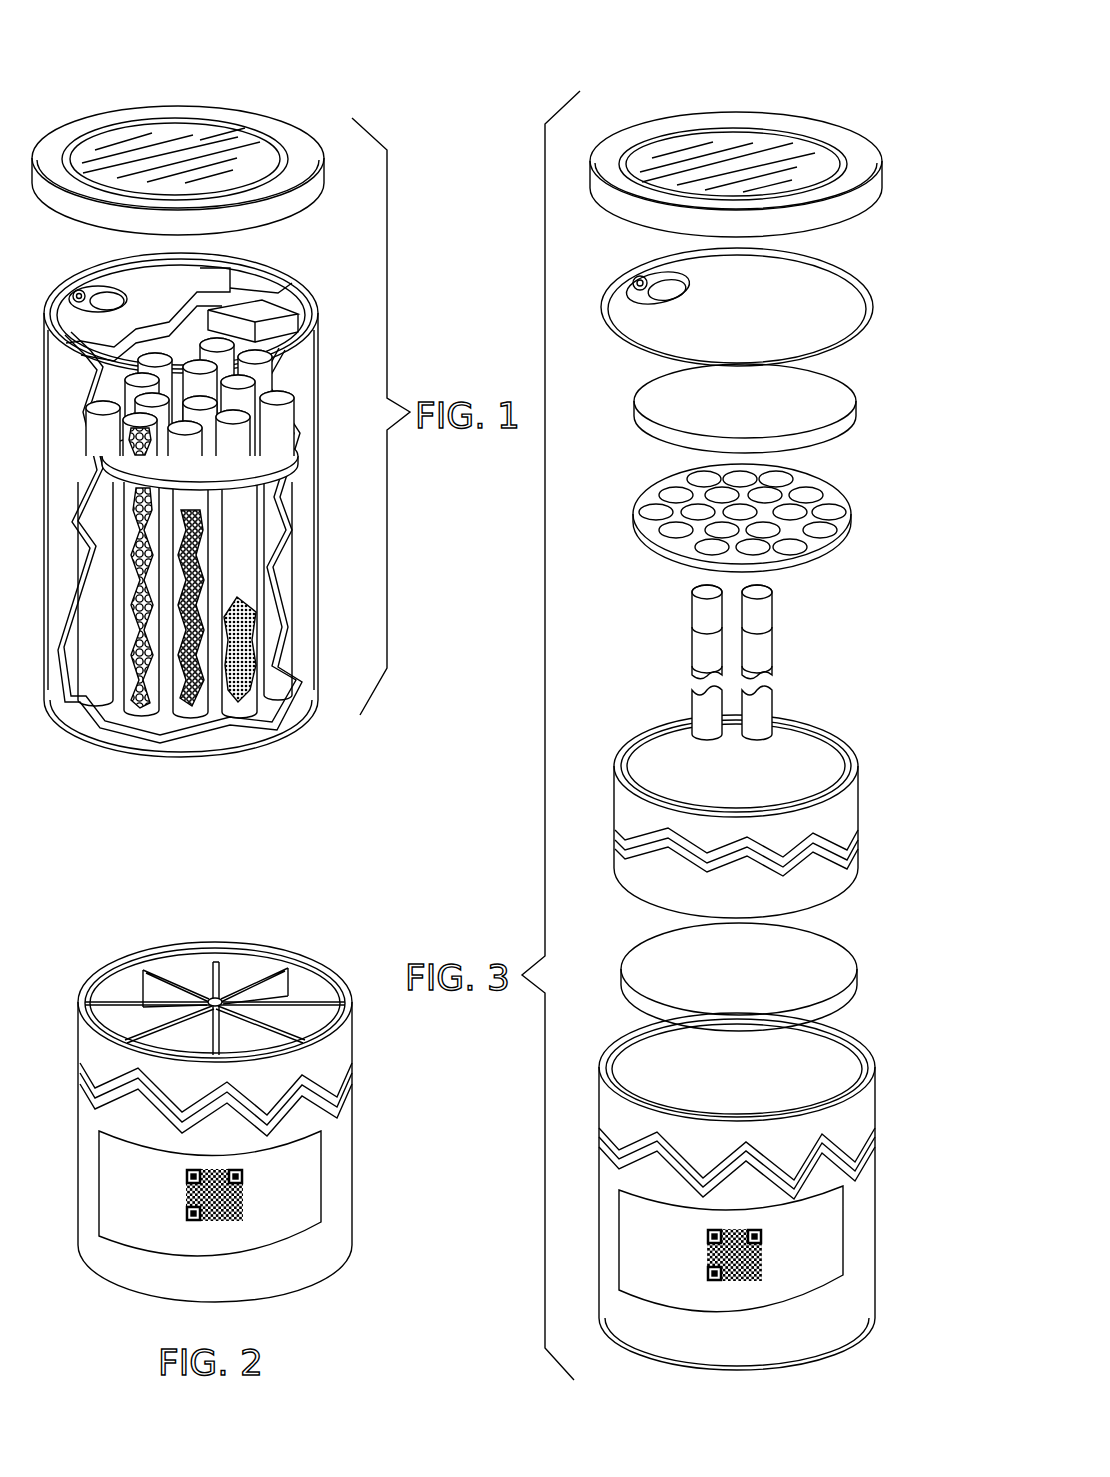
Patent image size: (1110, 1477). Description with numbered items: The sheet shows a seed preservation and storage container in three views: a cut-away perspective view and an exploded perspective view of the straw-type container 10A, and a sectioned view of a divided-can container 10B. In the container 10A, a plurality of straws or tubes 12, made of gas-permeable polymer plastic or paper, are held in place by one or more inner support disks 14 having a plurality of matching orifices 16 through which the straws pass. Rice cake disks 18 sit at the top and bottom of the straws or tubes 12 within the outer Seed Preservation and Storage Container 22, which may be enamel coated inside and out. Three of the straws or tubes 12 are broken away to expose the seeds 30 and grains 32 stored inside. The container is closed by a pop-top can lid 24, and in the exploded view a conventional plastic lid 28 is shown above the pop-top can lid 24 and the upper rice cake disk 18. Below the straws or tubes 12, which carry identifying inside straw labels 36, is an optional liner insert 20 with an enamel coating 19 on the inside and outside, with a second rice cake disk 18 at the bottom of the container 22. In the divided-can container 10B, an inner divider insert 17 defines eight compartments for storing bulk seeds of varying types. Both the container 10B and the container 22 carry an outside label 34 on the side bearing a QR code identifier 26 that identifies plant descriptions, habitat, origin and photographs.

In FIG. 1, the Seed Preservation and Storage Container 10A is at (230, 80).
In FIG. 3, the Seed Preservation and Storage Container 10A is at (660, 100).
In FIG. 2, the Seed Preservation and Storage Container 10B is at (287, 905).
In FIG. 1, the straws or tubes 12 is at (242, 576).
In FIG. 3, the straws or tubes 12 is at (701, 610).
In FIG. 1, the inner support disk 14 is at (250, 482).
In FIG. 3, the inner support disk 14 is at (812, 541).
In FIG. 1, the orifices 16 is at (258, 445).
In FIG. 3, the orifices 16 is at (827, 508).
In FIG. 2, the inner divider insert 17 is at (171, 993).
In FIG. 1, the rice cake disk 18 is at (255, 300).
In FIG. 3, the rice cake disk 18 is at (818, 402).
In FIG. 3, the enamel coating 19 is at (838, 1061).
In FIG. 3, the liner insert 20 is at (816, 764).
In FIG. 1, the outer Seed Preservation and Storage Container 22 is at (300, 370).
In FIG. 3, the outer Seed Preservation and Storage Container 22 is at (855, 1174).
In FIG. 1, the pop-top can lid 24 is at (107, 280).
In FIG. 3, the pop-top can lid 24 is at (665, 329).
In FIG. 2, the QR code identifier 26 is at (243, 1200).
In FIG. 3, the QR code identifier 26 is at (728, 1279).
In FIG. 1, the plastic lid 28 is at (252, 137).
In FIG. 3, the plastic lid 28 is at (773, 149).
In FIG. 1, the seeds 30 is at (247, 698).
In FIG. 1, the grains 32 is at (130, 705).
In FIG. 2, the outside label 34 is at (286, 1226).
In FIG. 3, the outside label 34 is at (806, 1285).
In FIG. 3, the inside straw labels 36 is at (707, 640).